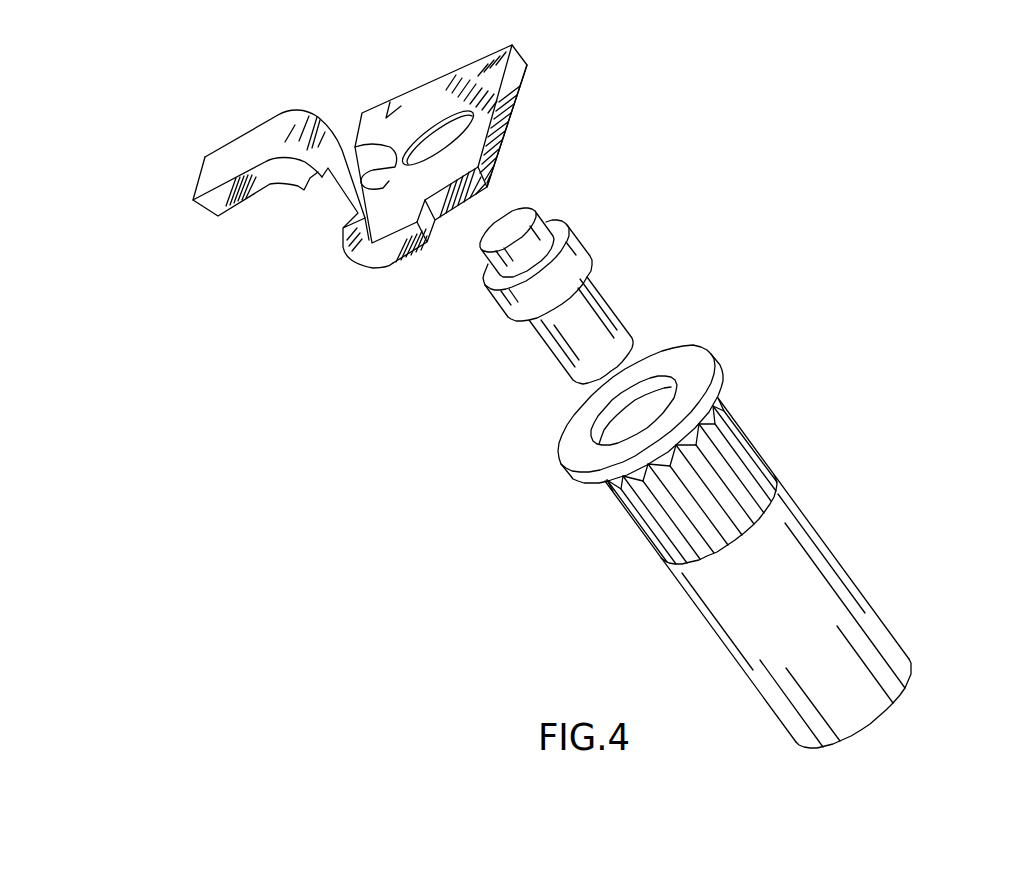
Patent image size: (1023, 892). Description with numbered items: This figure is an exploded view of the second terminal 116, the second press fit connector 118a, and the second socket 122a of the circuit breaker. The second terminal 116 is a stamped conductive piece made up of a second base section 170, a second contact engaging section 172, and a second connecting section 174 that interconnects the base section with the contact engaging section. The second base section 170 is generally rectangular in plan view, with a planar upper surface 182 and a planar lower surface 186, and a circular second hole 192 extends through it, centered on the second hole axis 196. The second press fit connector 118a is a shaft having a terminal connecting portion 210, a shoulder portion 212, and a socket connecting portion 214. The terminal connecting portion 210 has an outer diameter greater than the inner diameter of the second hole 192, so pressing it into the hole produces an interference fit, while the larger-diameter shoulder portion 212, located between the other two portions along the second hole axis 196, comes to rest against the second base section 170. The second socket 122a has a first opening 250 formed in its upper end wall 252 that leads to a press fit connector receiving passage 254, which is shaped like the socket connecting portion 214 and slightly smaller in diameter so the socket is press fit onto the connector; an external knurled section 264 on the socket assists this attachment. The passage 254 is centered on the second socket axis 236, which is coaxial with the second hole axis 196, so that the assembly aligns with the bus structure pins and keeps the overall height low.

The second terminal 116 is at (415, 155).
The second base section 170 is at (474, 148).
The second contact engaging section 172 is at (213, 208).
The second connecting section 174 is at (327, 194).
The planar upper surface 182 is at (452, 92).
The planar lower surface 186 is at (507, 130).
The second hole 192 is at (435, 126).
The second press fit connector 118a is at (569, 267).
The terminal connecting portion 210 is at (542, 224).
The shoulder portion 212 is at (503, 304).
The socket connecting portion 214 is at (594, 318).
The first opening 250 is at (600, 393).
The upper end wall 252 is at (580, 453).
The press fit connector receiving passage 254 is at (580, 433).
The second socket 122a is at (793, 580).
The external knurled section 264 is at (737, 448).
The second hole axis 196 is at (889, 713).
The second socket axis 236 is at (903, 768).